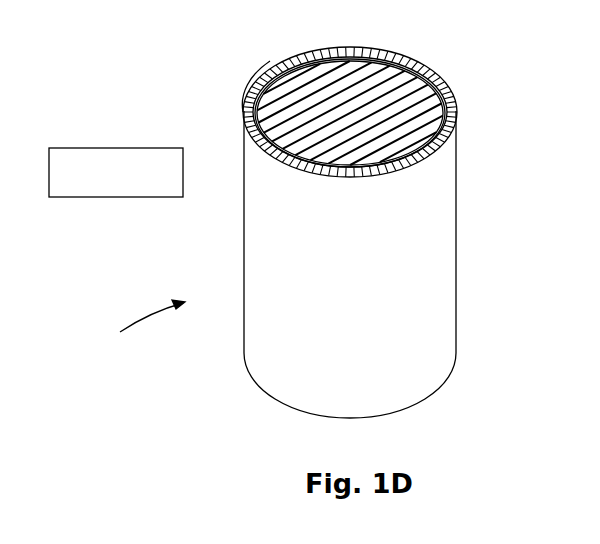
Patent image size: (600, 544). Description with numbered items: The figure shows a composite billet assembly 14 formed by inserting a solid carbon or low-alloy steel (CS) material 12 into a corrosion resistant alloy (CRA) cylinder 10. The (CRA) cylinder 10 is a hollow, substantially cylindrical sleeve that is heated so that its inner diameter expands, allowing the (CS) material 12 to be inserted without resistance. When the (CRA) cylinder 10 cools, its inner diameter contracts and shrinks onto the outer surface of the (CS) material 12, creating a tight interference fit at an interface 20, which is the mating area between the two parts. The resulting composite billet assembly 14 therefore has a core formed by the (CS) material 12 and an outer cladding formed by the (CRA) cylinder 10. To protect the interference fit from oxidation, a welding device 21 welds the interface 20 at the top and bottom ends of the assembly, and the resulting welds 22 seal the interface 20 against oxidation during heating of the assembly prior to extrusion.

The corrosion resistant alloy (CRA) cylinder 10 is at (443, 264).
The solid carbon or low-alloy steel (CS) material 12 is at (423, 118).
The composite billet assembly 14 is at (136, 330).
The interface 20 is at (443, 83).
The welding device 21 is at (130, 184).
The welds 22 is at (246, 98).